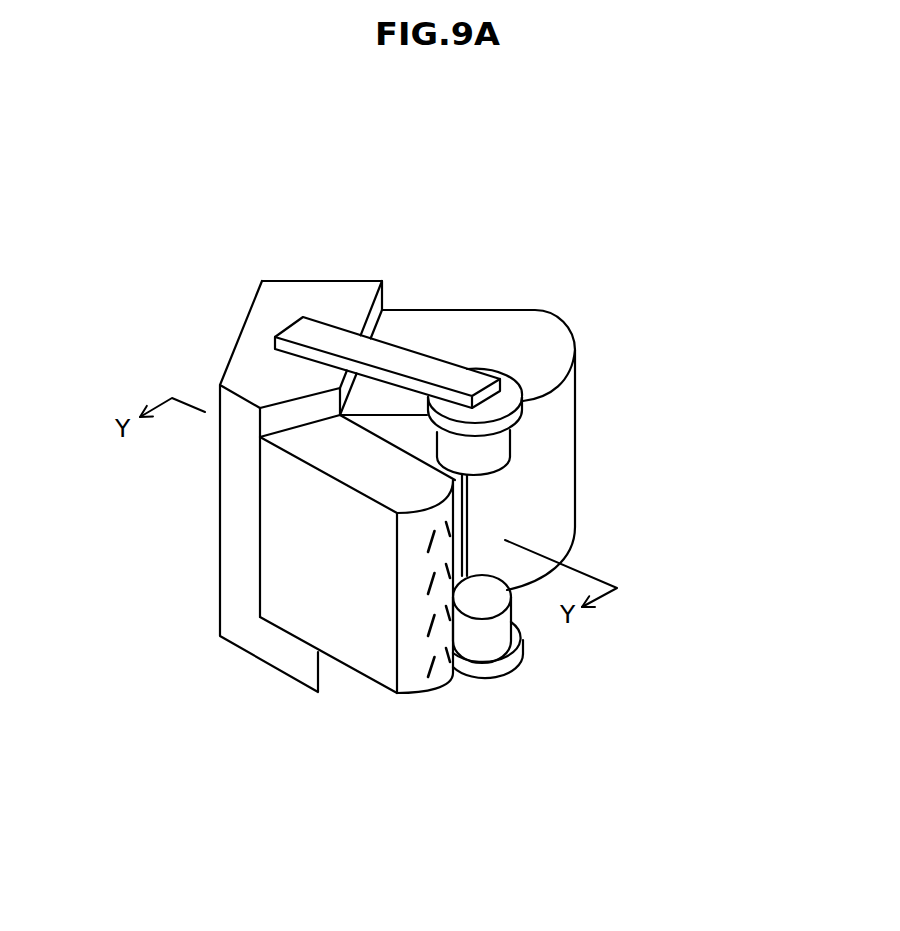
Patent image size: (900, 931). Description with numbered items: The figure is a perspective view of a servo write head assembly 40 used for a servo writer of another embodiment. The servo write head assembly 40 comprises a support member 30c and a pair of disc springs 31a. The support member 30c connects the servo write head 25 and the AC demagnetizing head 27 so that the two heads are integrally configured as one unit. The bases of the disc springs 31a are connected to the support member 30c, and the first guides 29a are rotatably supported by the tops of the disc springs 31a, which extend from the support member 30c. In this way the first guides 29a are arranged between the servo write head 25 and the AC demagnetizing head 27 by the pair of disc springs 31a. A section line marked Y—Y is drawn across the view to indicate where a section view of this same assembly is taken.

The support member 30c is at (258, 365).
The servo write head 25 is at (358, 643).
The AC demagnetizing head 27 is at (543, 332).
The disc spring 31a is at (412, 357).
The first guide 29a is at (502, 448).
The servo write head assembly 40 is at (500, 293).